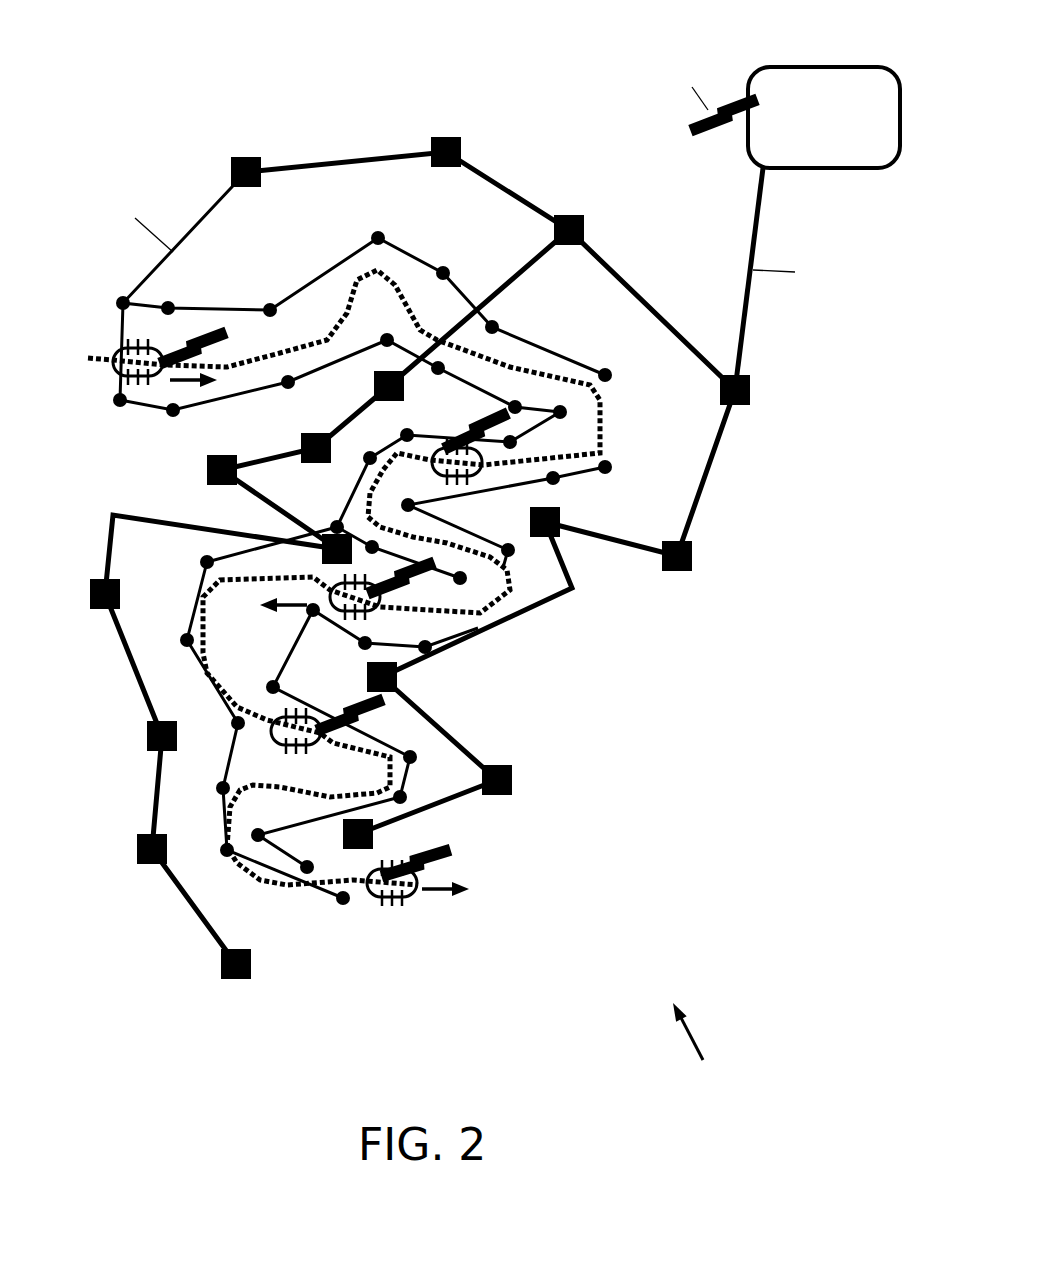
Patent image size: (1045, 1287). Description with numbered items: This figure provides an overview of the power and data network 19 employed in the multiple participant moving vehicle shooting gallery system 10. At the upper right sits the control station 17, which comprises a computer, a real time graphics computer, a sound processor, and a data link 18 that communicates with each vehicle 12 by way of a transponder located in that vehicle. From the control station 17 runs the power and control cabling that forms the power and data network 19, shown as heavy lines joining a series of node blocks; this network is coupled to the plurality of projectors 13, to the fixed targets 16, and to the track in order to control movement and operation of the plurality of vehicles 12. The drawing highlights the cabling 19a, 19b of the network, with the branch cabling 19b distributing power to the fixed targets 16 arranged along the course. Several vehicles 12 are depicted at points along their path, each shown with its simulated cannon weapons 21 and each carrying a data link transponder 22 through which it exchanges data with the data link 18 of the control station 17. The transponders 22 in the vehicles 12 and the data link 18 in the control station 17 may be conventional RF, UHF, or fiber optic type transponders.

The multiple participant moving vehicle shooting gallery system 10 is at (699, 1048).
The vehicle 12 is at (117, 373).
The projector 13 is at (250, 972).
The fixed target 16 is at (207, 470).
The control station 17 is at (832, 65).
The data link 18 is at (687, 122).
The power and data network 19 is at (753, 230).
The cabling 19a is at (707, 498).
The cabling 19b is at (212, 218).
The simulated cannon weapon 21 is at (393, 900).
The data link transponder 22 is at (198, 333).